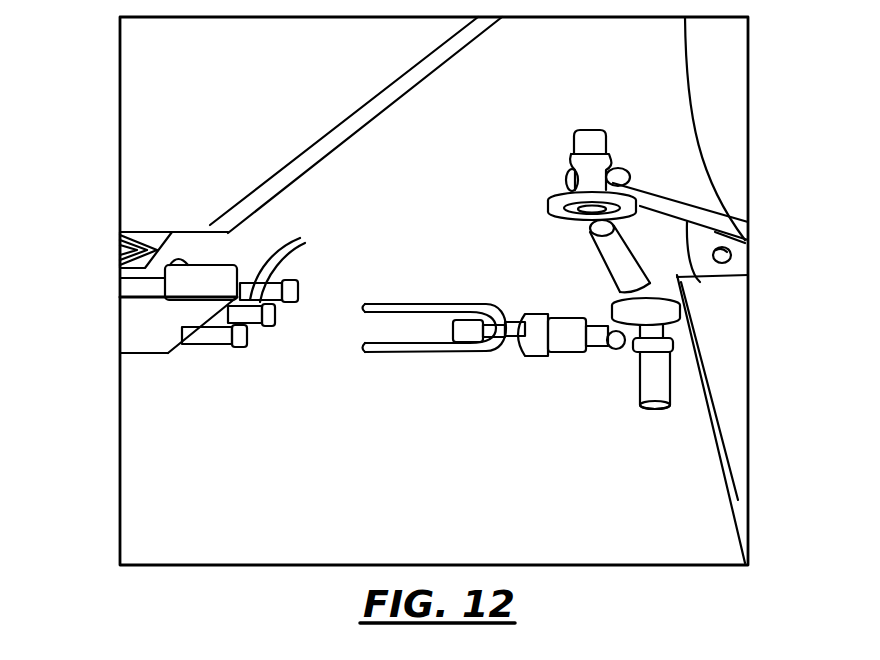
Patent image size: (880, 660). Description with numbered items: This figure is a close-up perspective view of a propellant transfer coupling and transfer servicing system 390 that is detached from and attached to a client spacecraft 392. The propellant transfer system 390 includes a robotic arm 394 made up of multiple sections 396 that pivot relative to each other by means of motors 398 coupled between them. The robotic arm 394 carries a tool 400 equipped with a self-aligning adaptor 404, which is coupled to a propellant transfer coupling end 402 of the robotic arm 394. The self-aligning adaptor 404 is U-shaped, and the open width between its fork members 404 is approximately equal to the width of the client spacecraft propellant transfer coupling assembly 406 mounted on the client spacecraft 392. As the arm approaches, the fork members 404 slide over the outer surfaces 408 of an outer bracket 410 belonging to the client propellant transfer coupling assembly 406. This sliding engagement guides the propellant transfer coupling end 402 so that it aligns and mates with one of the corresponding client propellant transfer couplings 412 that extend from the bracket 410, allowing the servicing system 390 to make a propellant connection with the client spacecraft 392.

The propellant transfer coupling and transfer servicing system 390 is at (759, 219).
The client spacecraft 392 is at (221, 115).
The robotic arm 394 is at (738, 232).
The sections 396 is at (662, 268).
The motors 398 is at (612, 190).
The tool 400 is at (415, 356).
The propellant transfer coupling end 402 is at (503, 349).
The self-aligning adaptor 404 is at (386, 342).
The client spacecraft propellant transfer coupling assembly 406 is at (143, 327).
The outer surfaces 408 is at (138, 302).
The outer bracket 410 is at (153, 265).
The client propellant transfer couplings 412 is at (299, 265).